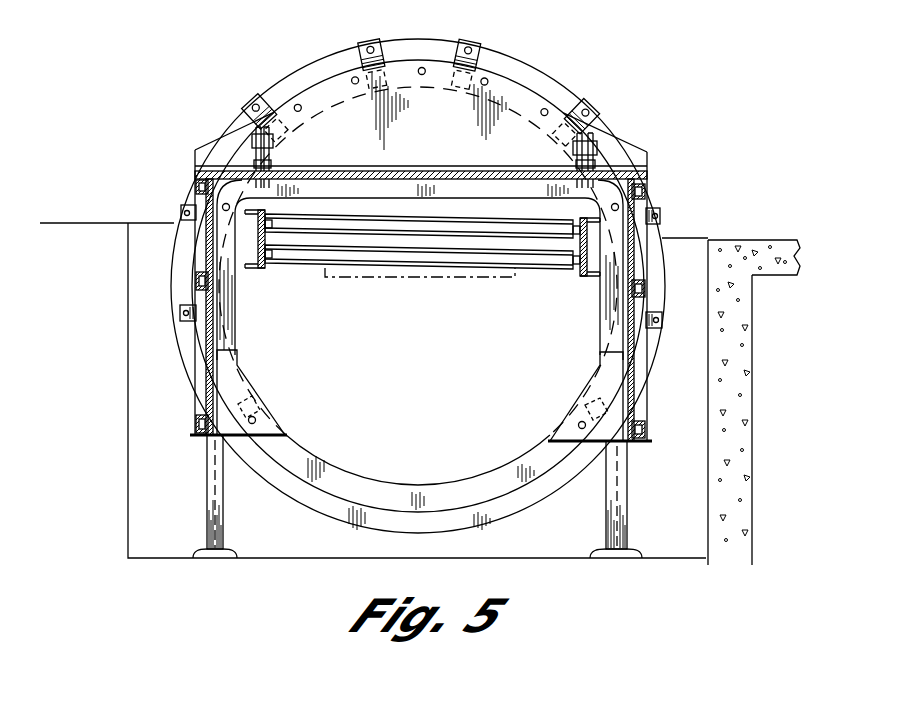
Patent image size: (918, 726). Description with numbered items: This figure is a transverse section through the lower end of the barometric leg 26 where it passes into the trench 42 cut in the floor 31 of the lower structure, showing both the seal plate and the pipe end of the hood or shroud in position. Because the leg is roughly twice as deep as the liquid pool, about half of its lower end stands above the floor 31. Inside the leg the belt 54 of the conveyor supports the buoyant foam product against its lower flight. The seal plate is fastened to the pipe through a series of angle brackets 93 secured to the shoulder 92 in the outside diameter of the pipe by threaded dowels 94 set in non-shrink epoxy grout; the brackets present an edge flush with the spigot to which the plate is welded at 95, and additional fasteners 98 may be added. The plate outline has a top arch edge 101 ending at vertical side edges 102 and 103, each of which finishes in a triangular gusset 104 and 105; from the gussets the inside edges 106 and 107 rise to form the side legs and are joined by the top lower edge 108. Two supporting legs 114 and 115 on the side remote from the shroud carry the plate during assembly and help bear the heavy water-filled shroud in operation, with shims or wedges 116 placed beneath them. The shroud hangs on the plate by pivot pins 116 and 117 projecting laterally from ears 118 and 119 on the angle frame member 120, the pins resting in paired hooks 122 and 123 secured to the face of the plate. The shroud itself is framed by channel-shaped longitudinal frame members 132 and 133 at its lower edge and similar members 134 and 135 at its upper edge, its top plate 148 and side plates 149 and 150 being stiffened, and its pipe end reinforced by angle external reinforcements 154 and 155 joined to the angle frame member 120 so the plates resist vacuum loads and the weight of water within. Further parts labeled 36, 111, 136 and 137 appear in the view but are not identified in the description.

The barometric leg 26 is at (584, 122).
The floor 31 is at (764, 240).
The conduit 36 is at (448, 279).
The trench 42 is at (682, 230).
The belt 54 is at (300, 264).
The shoulder 92 is at (512, 60).
The angle bracket 93 is at (480, 53).
The threaded dowel 94 is at (370, 45).
The weld 95 is at (384, 68).
The additional fastener 98 is at (352, 77).
The top arch edge 101 is at (307, 84).
The vertical side edge 102 is at (206, 242).
The vertical side edge 103 is at (645, 290).
The triangular gusset 104 is at (270, 408).
The triangular gusset 105 is at (566, 418).
The inside edge 106 is at (238, 326).
The inside edge 107 is at (600, 345).
The top lower edge 108 is at (449, 210).
The frame corner 111 is at (648, 172).
The supporting leg 114 is at (207, 490).
The supporting leg 115 is at (628, 506).
The pivot pin 116 is at (250, 137).
The pivot pin 117 is at (598, 148).
The ear 118 is at (270, 162).
The ear 119 is at (576, 164).
The angle frame member 120 is at (334, 165).
The paired hook 122 is at (256, 118).
The paired hook 123 is at (594, 142).
The longitudinal frame member 132 is at (196, 428).
The longitudinal frame member 133 is at (645, 434).
The longitudinal frame member 134 is at (200, 182).
The longitudinal frame member 135 is at (645, 192).
The bolt block 136 is at (197, 282).
The tab 137 is at (660, 324).
The top plate 148 is at (394, 171).
The side plate 149 is at (210, 380).
The side plate 150 is at (632, 396).
The angle external reinforcement 154 is at (186, 334).
The angle external reinforcement 155 is at (642, 270).